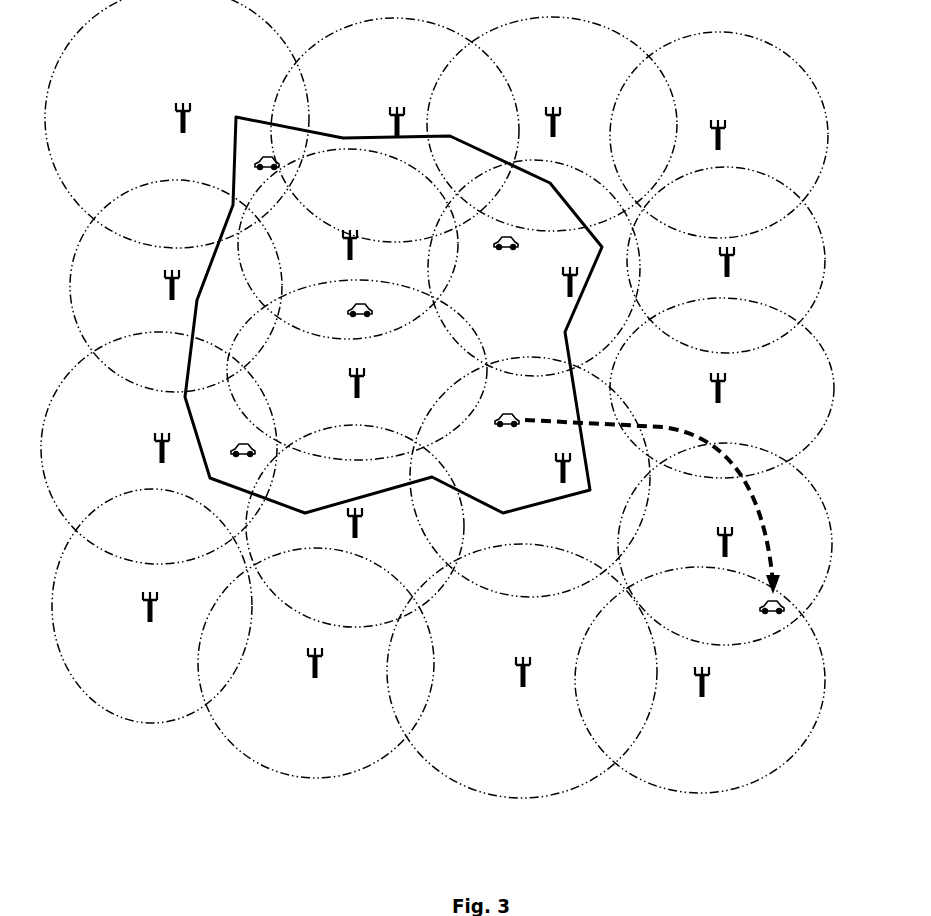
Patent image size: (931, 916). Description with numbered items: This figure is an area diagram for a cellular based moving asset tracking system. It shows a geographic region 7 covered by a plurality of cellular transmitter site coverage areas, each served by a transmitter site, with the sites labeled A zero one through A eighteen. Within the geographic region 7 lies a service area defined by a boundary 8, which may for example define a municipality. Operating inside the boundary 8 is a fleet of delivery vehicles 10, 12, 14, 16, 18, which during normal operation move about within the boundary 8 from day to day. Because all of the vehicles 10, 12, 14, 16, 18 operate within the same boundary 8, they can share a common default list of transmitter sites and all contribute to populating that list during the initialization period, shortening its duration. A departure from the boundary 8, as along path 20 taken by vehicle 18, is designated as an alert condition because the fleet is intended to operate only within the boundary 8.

The geographic region 7 is at (170, 776).
The boundary 8 is at (236, 160).
The delivery vehicle 10 is at (243, 445).
The delivery vehicle 12 is at (266, 157).
The delivery vehicle 14 is at (350, 307).
The delivery vehicle 16 is at (500, 248).
The delivery vehicle 18 is at (507, 425).
The path 20 is at (675, 428).